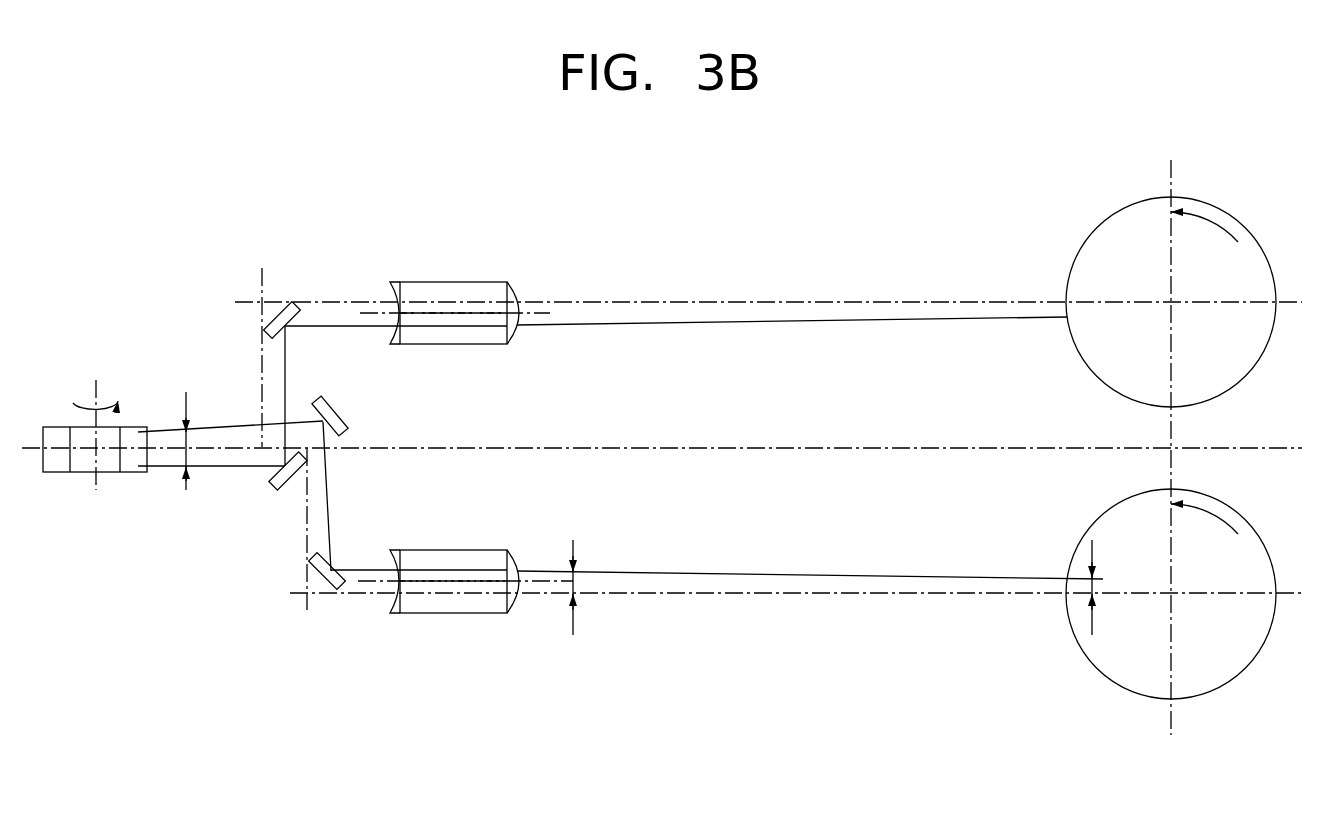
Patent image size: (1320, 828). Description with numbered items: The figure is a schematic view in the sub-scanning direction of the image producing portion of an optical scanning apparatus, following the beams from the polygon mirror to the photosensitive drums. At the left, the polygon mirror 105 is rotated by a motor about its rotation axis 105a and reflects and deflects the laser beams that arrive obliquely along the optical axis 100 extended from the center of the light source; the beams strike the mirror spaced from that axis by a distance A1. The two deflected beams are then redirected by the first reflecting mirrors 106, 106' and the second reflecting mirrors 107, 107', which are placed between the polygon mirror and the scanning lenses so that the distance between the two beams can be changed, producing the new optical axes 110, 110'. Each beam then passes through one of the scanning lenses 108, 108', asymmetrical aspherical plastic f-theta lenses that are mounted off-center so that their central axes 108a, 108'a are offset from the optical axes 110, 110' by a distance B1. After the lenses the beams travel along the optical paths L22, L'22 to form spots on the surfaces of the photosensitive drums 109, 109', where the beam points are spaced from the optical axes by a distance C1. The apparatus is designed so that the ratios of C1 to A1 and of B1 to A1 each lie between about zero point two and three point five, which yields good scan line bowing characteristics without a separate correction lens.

The polygon mirror 105 is at (55, 473).
The rotation axis 105a is at (95, 388).
The optical axis 100 is at (218, 450).
The distance between optical axis and beam point on polygon mirror A1 is at (170, 441).
The first reflecting mirror 106 is at (352, 403).
The first reflecting mirror 106' is at (273, 499).
The second reflecting mirror 107 is at (324, 597).
The second reflecting mirror 107' is at (299, 294).
The scanning lens 108 is at (454, 609).
The central axis of scanning lens 108a is at (433, 582).
The scanning lens 108' is at (454, 285).
The central axis of scanning lens 108'a is at (453, 275).
The optical axis 110 is at (717, 611).
The optical axis 110' is at (676, 284).
The optical path L22 is at (730, 572).
The optical path L'22 is at (812, 349).
The distance between optical axis and central axis of scanning lens B1 is at (556, 587).
The photosensitive drum 109 is at (1153, 604).
The photosensitive drum 109' is at (1149, 295).
The distance between optical axis and beam point on photosensitive drum C1 is at (1110, 587).